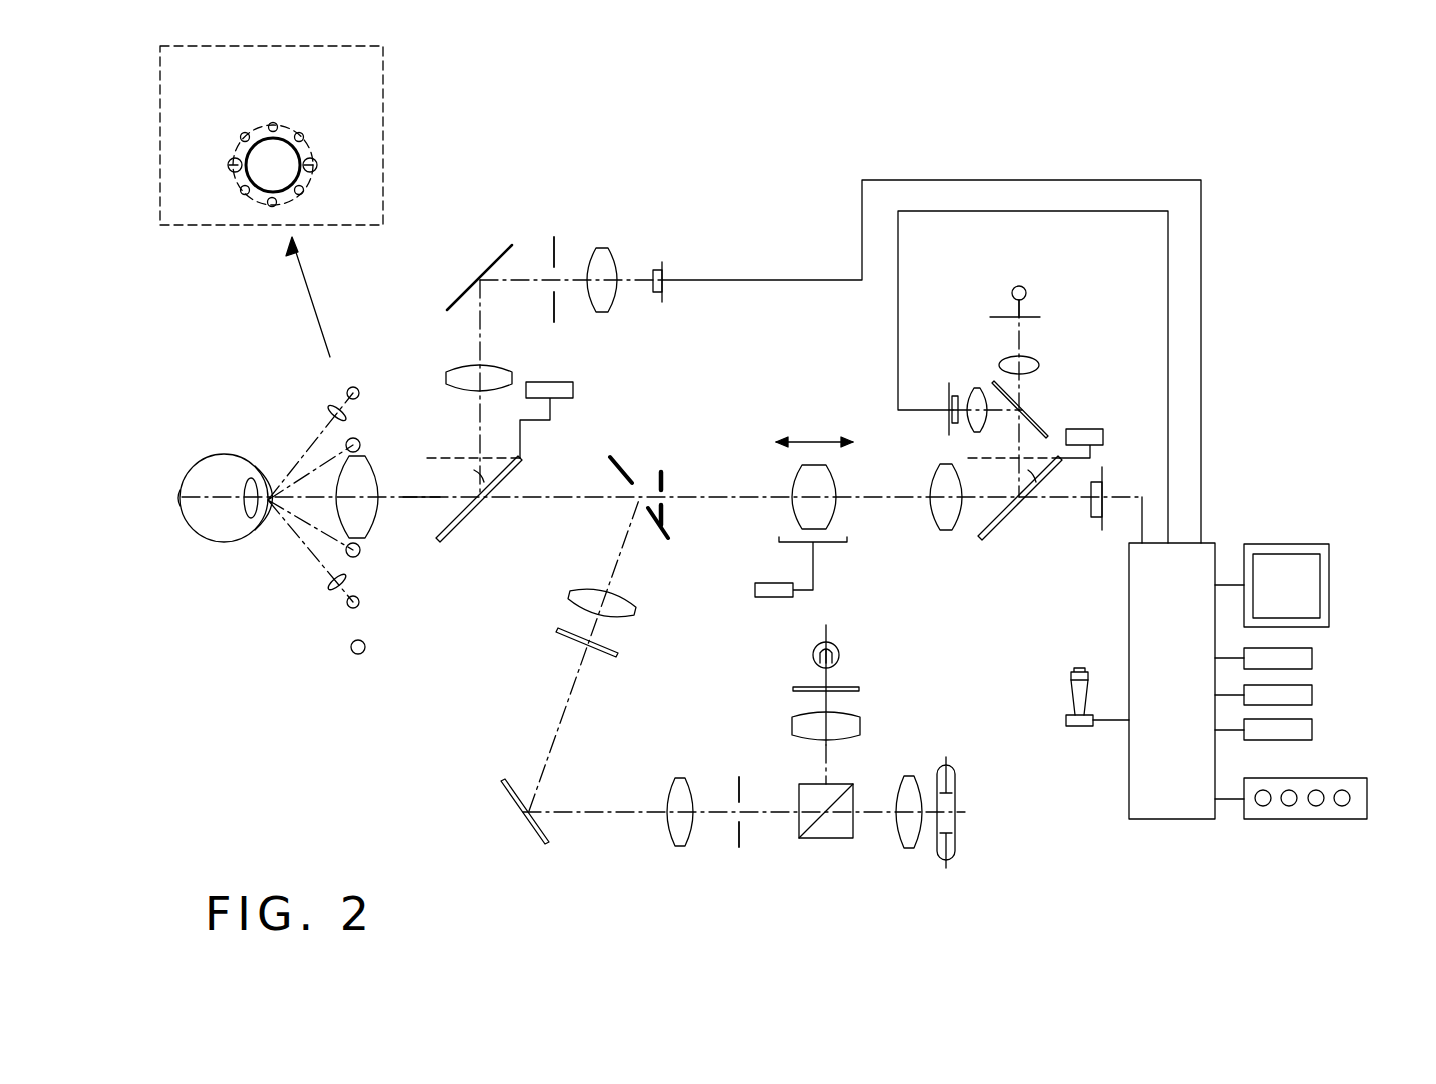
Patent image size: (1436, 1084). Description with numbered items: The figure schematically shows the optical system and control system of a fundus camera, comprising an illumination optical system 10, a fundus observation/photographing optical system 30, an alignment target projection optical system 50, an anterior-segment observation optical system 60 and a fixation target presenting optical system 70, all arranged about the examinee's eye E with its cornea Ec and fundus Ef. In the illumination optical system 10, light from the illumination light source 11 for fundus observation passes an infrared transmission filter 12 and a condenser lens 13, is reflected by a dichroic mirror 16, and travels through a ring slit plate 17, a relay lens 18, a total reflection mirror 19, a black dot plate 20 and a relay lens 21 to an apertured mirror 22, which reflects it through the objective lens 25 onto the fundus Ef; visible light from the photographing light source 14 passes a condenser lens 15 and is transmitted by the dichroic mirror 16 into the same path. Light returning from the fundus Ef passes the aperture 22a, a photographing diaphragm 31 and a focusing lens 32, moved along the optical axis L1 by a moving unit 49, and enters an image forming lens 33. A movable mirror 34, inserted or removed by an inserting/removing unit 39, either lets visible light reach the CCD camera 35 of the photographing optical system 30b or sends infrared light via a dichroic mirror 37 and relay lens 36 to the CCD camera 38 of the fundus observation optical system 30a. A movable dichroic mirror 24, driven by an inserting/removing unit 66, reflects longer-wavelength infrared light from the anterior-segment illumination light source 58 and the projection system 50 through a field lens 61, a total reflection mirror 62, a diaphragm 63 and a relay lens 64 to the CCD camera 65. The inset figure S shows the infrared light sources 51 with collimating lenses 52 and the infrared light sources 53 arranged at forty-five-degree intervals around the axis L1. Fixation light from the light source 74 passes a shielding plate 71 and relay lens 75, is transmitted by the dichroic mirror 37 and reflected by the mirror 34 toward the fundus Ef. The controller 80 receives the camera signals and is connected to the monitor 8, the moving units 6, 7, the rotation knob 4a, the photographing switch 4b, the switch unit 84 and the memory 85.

The figure enclosed with dashed lines S is at (271, 201).
The alignment target projection optical system 50 is at (246, 128).
The infrared light source 51 is at (232, 160).
The collimating lens 52 is at (232, 171).
The infrared light source 53 is at (299, 132).
The infrared illumination light source for anterior-segment observation 58 is at (356, 654).
The examinee's eye E is at (220, 542).
The cornea Ec is at (272, 480).
The fundus Ef is at (183, 505).
The optical axis L1 is at (403, 500).
The objective lens 25 is at (362, 470).
The movable dichroic mirror 24 is at (462, 523).
The inserting/removing unit 66 is at (558, 388).
The field lens 61 is at (460, 378).
The total reflection mirror 62 is at (500, 258).
The anterior-segment observation optical system 60 is at (456, 264).
The diaphragm 63 is at (556, 240).
The relay lens 64 is at (607, 252).
The CCD camera for anterior-segment observation 65 is at (660, 270).
The apertured mirror 22 is at (623, 472).
The aperture 22a is at (622, 492).
The photographing diaphragm 31 is at (662, 470).
The relay lens 21 is at (582, 588).
The black dot plate 20 is at (620, 655).
The total reflection mirror 19 is at (508, 790).
The illumination optical system 10 is at (448, 790).
The relay lens 18 is at (675, 838).
The ring slit plate 17 is at (736, 830).
The dichroic mirror 16 is at (832, 826).
The condenser lens 15 is at (905, 830).
The visible illumination light source for photographing 14 is at (950, 820).
The illumination light source for fundus observation 11 is at (838, 648).
The infrared transmission filter 12 is at (862, 689).
The condenser lens 13 is at (845, 726).
The fundus observation/photographing optical system 30 is at (742, 374).
The fundus observation optical system 30a is at (888, 420).
The focusing lens 32 is at (797, 475).
The moving unit 49 is at (765, 585).
The image forming lens 33 is at (946, 520).
The movable total reflection mirror 34 is at (1000, 520).
The photographing optical system 30b is at (1058, 513).
The relay lens 36 is at (972, 425).
The CCD camera for fundus observation 38 is at (950, 390).
The CCD camera for photographing 35 is at (1105, 485).
The inserting/removing unit 39 is at (1090, 437).
The dichroic mirror 37 is at (1040, 425).
The fixation target presenting optical system 70 is at (1063, 343).
The relay lens 75 is at (1000, 362).
The shielding plate 71 is at (1005, 316).
The fixation target light source 74 is at (1012, 288).
The controller 80 is at (1128, 765).
The monitor 8 is at (1290, 543).
The moving unit 6 is at (1315, 658).
The moving unit 7 is at (1315, 695).
The memory 85 is at (1315, 730).
The switch unit 84 is at (1360, 785).
The rotation knob 4a is at (1072, 695).
The photographing switch 4b is at (1078, 676).